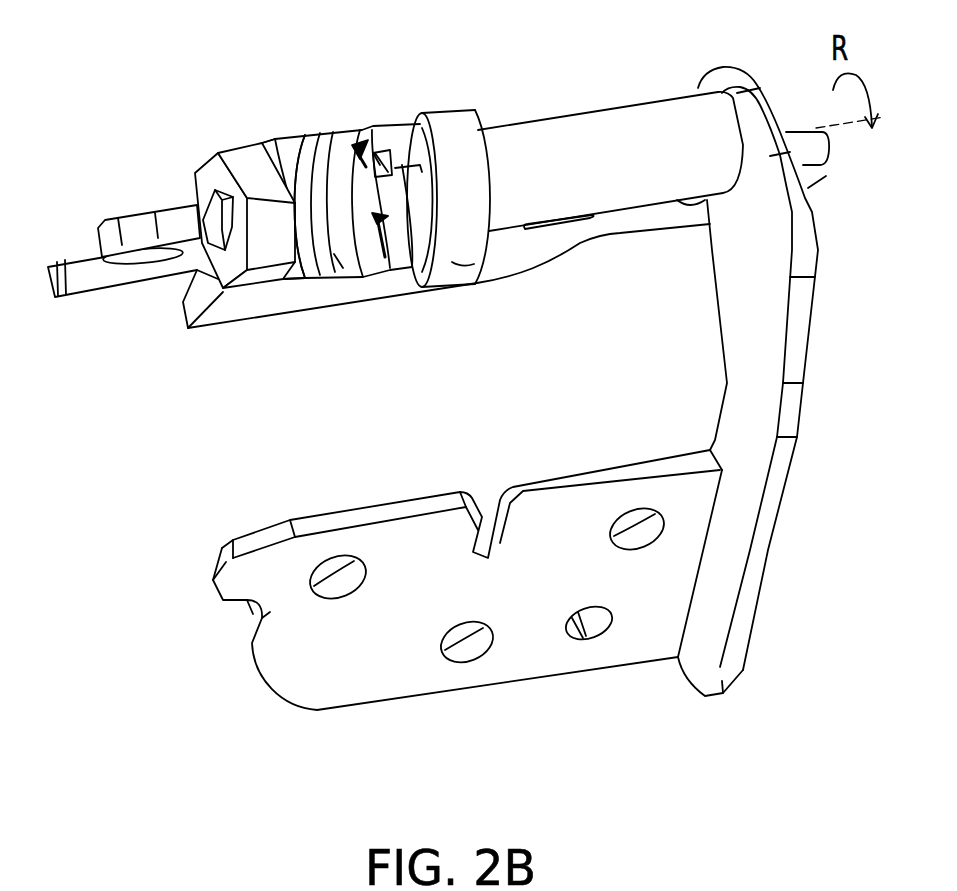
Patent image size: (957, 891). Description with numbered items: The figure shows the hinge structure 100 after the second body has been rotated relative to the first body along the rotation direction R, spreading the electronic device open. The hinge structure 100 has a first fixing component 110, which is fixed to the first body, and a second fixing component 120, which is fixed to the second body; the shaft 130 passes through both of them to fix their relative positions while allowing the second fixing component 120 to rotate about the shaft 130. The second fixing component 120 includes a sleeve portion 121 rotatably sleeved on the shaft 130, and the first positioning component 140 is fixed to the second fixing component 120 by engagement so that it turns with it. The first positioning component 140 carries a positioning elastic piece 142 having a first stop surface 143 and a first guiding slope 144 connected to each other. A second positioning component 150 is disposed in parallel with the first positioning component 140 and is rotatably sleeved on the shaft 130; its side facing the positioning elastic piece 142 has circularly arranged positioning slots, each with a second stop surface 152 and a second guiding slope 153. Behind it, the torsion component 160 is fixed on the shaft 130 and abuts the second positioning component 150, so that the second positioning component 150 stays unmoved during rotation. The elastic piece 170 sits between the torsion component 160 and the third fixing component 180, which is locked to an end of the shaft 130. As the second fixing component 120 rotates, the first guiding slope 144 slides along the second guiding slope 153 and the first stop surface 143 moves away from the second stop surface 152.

The hinge structure 100 is at (466, 394).
The first fixing component 110 is at (350, 677).
The second fixing component 120 is at (87, 273).
The sleeve portion 121 is at (462, 263).
The shaft 130 is at (660, 120).
The first positioning component 140 is at (435, 257).
The positioning elastic piece 142 is at (423, 180).
The first stop surface 143 is at (400, 170).
The first guiding slope 144 is at (338, 260).
The second positioning component 150 is at (388, 263).
The second stop surface 152 is at (320, 183).
The second guiding slope 153 is at (392, 175).
The torsion component 160 is at (320, 270).
The elastic piece 170 is at (267, 200).
The third fixing component 180 is at (212, 177).